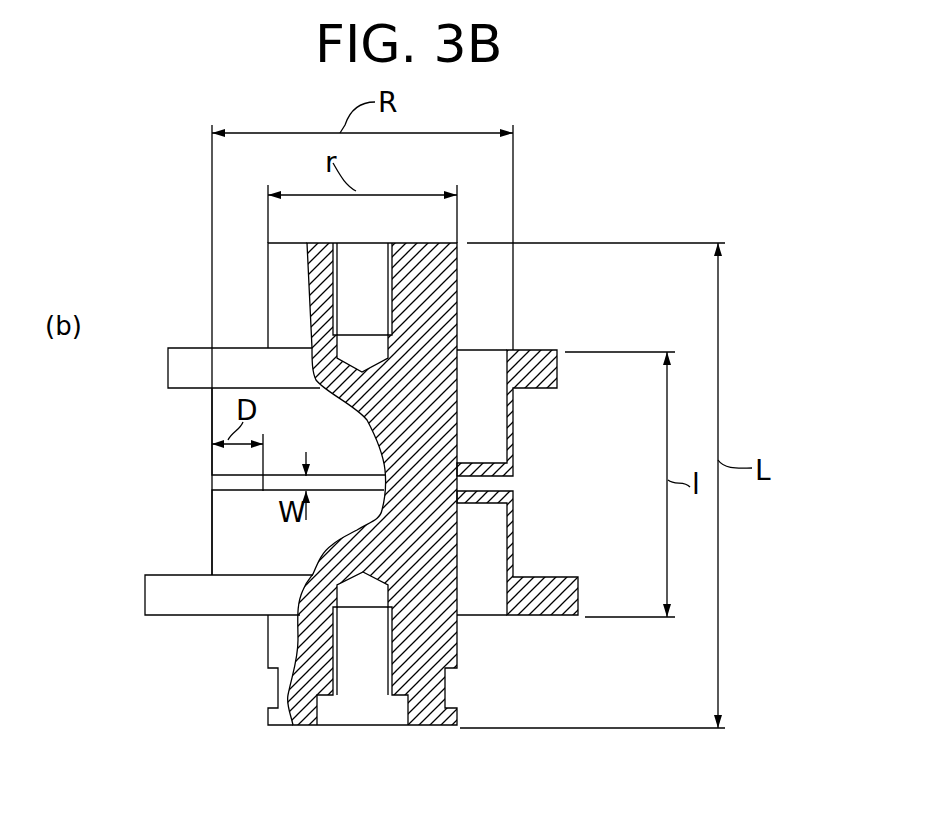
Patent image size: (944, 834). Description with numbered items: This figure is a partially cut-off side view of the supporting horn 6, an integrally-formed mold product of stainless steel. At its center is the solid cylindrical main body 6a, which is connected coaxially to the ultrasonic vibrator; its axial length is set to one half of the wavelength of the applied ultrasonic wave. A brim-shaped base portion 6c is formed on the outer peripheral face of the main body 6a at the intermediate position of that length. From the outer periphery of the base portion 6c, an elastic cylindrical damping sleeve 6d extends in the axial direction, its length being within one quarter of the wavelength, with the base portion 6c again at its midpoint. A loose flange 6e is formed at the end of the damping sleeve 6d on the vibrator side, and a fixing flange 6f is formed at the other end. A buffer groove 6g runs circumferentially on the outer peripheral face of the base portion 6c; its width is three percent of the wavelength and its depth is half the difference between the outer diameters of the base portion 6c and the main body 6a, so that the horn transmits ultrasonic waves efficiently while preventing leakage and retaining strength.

The supporting horn 6 is at (190, 284).
The main body 6a is at (457, 275).
The base portion 6c is at (478, 460).
The damping sleeve 6d is at (208, 428).
The loose flange 6e is at (175, 368).
The fixing flange 6f is at (153, 598).
The buffer groove 6g is at (233, 483).